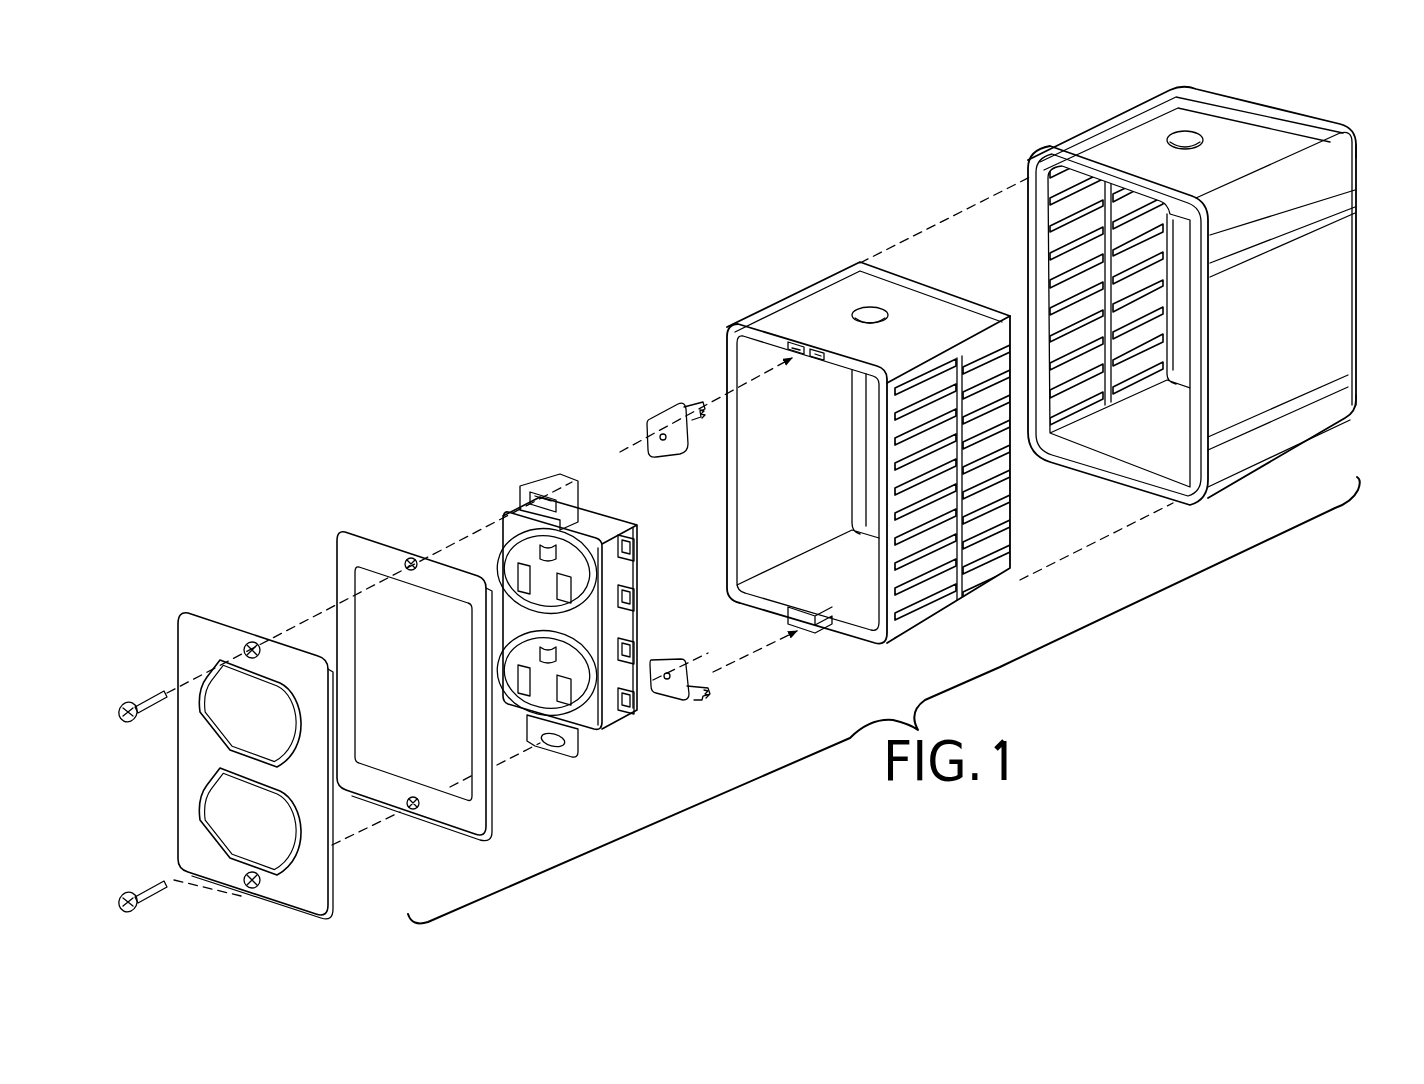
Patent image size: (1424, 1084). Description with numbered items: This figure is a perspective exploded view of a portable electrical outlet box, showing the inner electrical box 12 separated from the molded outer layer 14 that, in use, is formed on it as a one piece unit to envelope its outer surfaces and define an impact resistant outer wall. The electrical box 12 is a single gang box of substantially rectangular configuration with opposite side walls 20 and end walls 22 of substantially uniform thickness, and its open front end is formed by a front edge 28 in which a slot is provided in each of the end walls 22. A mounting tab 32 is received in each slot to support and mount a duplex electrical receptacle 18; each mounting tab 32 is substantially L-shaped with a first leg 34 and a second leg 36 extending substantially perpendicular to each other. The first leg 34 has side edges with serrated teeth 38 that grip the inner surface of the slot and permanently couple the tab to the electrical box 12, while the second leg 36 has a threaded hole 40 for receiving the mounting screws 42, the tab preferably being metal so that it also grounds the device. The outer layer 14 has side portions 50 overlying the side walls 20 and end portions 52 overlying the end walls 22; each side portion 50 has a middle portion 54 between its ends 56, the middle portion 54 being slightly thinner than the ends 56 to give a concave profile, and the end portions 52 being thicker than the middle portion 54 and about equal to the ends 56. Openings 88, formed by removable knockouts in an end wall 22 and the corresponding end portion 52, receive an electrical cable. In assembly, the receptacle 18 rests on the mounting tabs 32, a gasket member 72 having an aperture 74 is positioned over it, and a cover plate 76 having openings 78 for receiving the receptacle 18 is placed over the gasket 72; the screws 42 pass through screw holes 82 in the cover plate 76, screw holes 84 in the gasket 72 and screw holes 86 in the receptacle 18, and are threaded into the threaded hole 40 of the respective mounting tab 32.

The electrical box 12 is at (873, 366).
The outer layer 14 is at (1186, 295).
The duplex electrical receptacle 18 is at (530, 587).
The side walls 20 is at (722, 348).
The end walls 22 is at (921, 209).
The front edge 28 is at (737, 518).
The mounting tab 32 is at (676, 560).
The first leg 34 is at (676, 407).
The second leg 36 is at (650, 430).
The serrated teeth 38 is at (698, 428).
The threaded hole 40 is at (662, 441).
The mounting screws 42 is at (145, 700).
The side portions 50 is at (1022, 260).
The end portions 52 is at (1110, 145).
The middle portion 54 is at (1313, 293).
The ends 56 is at (1360, 168).
The gasket member 72 is at (383, 655).
The aperture 74 is at (356, 600).
The cover plate 76 is at (229, 732).
The openings 78 is at (240, 712).
The screw holes 82 is at (251, 641).
The screw holes 84 is at (410, 558).
The screw holes 86 is at (527, 500).
The openings 88 is at (866, 304).